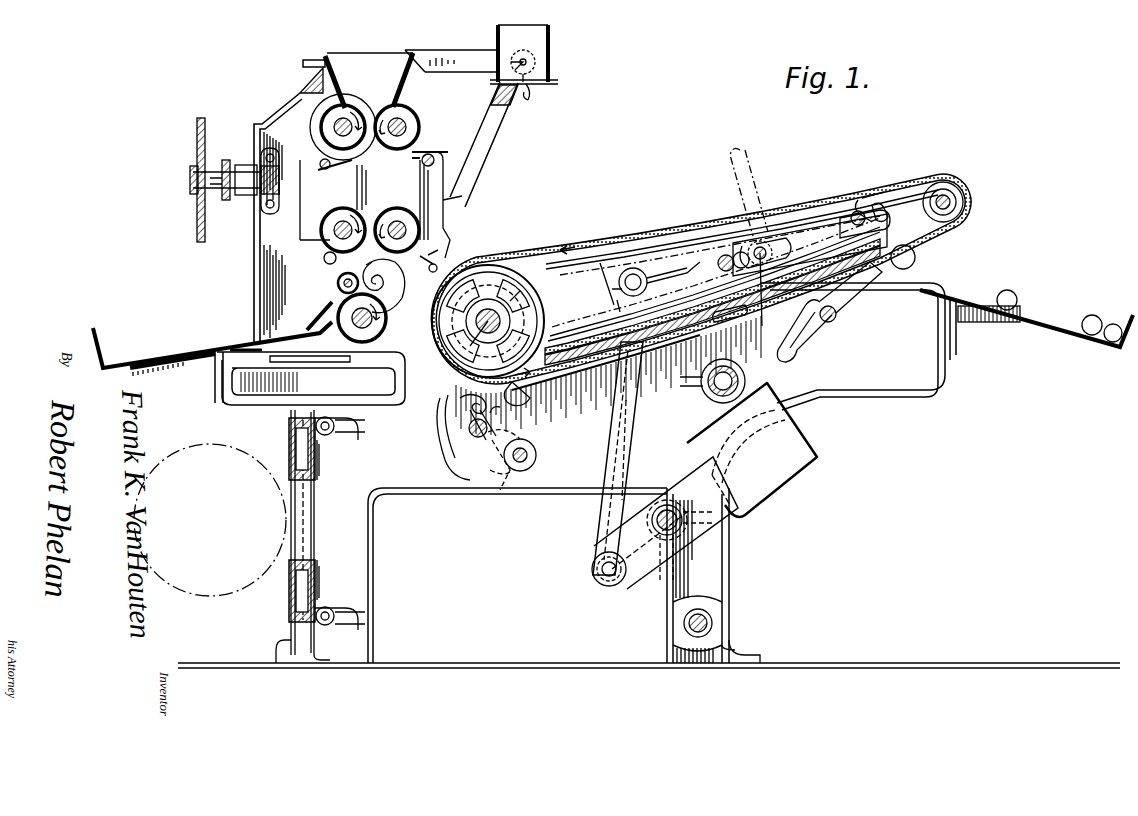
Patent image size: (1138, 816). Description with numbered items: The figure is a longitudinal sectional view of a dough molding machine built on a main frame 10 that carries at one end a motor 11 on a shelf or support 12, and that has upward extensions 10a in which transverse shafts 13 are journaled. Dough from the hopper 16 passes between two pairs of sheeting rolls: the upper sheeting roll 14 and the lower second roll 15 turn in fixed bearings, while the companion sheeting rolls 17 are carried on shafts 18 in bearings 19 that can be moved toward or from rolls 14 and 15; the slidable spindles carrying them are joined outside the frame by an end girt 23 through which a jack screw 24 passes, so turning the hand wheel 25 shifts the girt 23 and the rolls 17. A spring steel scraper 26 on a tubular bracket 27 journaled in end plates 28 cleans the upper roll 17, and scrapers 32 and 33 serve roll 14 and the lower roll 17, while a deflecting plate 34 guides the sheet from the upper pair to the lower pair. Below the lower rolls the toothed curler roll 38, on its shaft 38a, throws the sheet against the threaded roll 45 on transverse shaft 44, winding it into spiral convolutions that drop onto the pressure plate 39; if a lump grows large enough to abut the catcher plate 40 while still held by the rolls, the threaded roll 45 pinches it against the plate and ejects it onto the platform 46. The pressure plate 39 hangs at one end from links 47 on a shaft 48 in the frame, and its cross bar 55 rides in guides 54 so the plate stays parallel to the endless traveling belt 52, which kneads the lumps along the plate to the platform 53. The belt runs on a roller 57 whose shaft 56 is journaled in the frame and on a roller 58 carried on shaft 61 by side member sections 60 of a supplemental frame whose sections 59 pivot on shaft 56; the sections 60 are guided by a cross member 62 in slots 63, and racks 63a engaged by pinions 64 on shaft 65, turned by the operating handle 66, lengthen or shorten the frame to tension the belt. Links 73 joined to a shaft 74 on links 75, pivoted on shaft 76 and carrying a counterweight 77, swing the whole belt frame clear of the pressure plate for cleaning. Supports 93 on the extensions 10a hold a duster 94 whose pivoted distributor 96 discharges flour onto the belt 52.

The main frame 10 is at (373, 548).
The upward extensions of the main frame 10a is at (256, 258).
The motor 11 is at (212, 586).
The shelf or support 12 is at (290, 592).
The transverse shaft 13 is at (318, 118).
The sheeting roll 14 is at (322, 132).
The second roll 15 is at (321, 228).
The hopper 16 is at (350, 58).
The sheeting roll 17 is at (414, 108).
The shaft 18 is at (410, 122).
The bearing 19 is at (335, 236).
The end girt 23 is at (226, 198).
The jack screw 24 is at (282, 180).
The hand wheel 25 is at (196, 135).
The scraper 26 is at (432, 155).
The tubular bracket 27 is at (443, 172).
The end plate 28 is at (448, 190).
The scraper 32 is at (342, 170).
The scraper 33 is at (436, 270).
The deflecting plate 34 is at (363, 184).
The curler roll 38 is at (340, 332).
The shaft of the curling roller 38a is at (360, 330).
The pressure plate 39 is at (600, 372).
The catcher plate 40 is at (378, 268).
The transverse shaft 44 is at (336, 283).
The threaded roll 45 is at (330, 304).
The platform 46 is at (180, 359).
The link 47 is at (506, 488).
The shaft 48 is at (527, 450).
The endless traveling belt 52 is at (642, 240).
The platform 53 is at (1042, 326).
The guide 54 is at (815, 345).
The cross bar 55 is at (840, 312).
The shaft 56 is at (470, 397).
The roller 57 is at (432, 382).
The roller 58 is at (968, 205).
The side member section 59 is at (600, 268).
The side member section 60 is at (806, 214).
The shaft 61 is at (950, 197).
The cross member 62 is at (878, 205).
The slot 63 is at (862, 198).
The rack 63a is at (738, 252).
The pinion 64 is at (768, 240).
The shaft 65 is at (767, 298).
The operating handle 66 is at (744, 162).
The link 73 is at (600, 514).
The shaft 74 is at (606, 580).
The link 75 is at (652, 568).
The shaft 76 is at (678, 532).
The counterweight 77 is at (775, 476).
The support 93 is at (458, 55).
The duster 94 is at (550, 48).
The distributor 96 is at (532, 96).